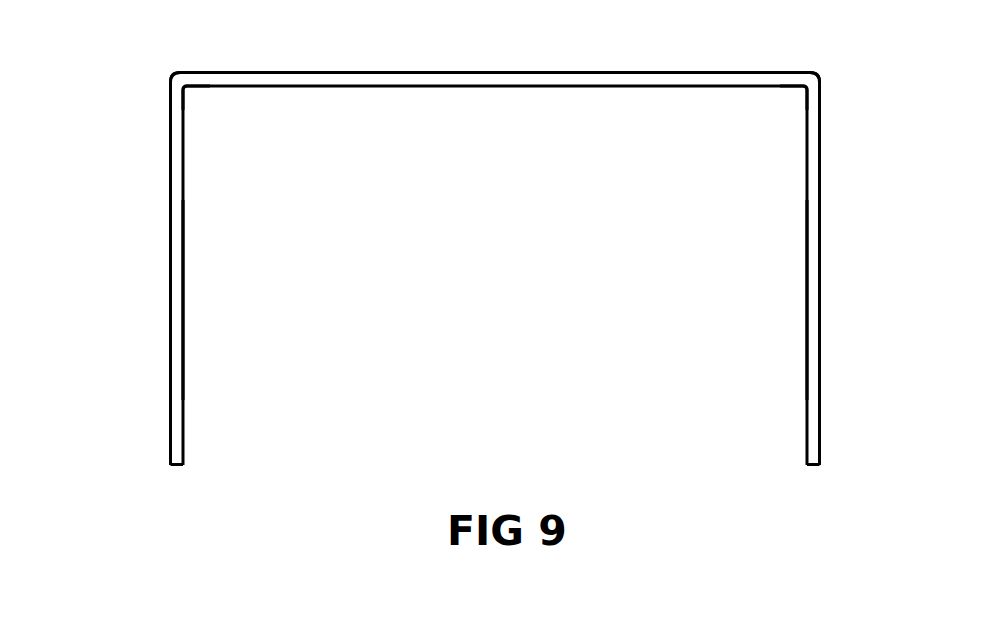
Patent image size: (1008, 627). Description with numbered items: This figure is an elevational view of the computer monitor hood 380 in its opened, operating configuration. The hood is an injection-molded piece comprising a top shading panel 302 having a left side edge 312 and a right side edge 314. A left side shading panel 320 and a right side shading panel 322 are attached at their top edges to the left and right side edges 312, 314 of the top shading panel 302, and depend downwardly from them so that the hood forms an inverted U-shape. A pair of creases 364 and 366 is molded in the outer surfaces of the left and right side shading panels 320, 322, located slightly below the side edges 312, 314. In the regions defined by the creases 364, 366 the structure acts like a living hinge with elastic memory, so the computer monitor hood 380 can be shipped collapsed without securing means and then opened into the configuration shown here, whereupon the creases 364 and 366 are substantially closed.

The top shading panel 302 is at (385, 87).
The left side edge 312 is at (175, 72).
The right side edge 314 is at (815, 72).
The left side shading panel 320 is at (182, 297).
The right side shading panel 322 is at (810, 287).
The crease 364 is at (180, 96).
The crease 366 is at (810, 97).
The computer monitor hood 380 is at (527, 173).